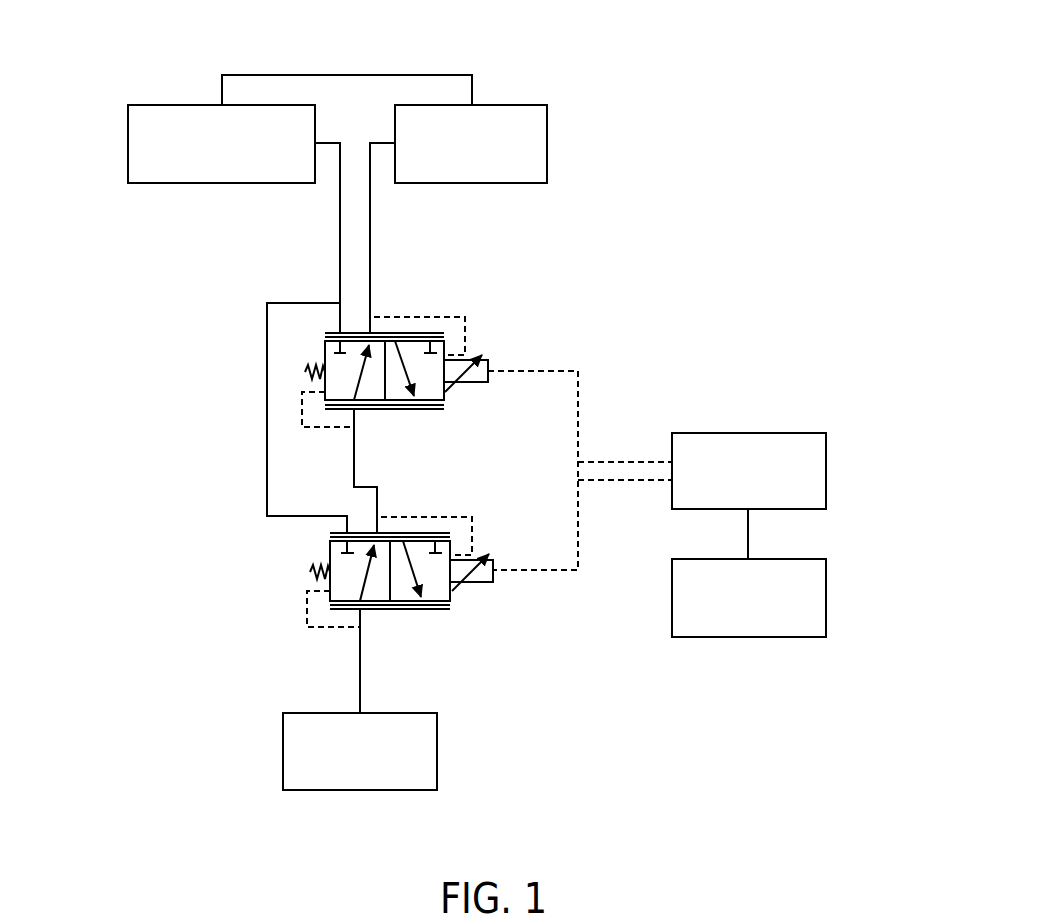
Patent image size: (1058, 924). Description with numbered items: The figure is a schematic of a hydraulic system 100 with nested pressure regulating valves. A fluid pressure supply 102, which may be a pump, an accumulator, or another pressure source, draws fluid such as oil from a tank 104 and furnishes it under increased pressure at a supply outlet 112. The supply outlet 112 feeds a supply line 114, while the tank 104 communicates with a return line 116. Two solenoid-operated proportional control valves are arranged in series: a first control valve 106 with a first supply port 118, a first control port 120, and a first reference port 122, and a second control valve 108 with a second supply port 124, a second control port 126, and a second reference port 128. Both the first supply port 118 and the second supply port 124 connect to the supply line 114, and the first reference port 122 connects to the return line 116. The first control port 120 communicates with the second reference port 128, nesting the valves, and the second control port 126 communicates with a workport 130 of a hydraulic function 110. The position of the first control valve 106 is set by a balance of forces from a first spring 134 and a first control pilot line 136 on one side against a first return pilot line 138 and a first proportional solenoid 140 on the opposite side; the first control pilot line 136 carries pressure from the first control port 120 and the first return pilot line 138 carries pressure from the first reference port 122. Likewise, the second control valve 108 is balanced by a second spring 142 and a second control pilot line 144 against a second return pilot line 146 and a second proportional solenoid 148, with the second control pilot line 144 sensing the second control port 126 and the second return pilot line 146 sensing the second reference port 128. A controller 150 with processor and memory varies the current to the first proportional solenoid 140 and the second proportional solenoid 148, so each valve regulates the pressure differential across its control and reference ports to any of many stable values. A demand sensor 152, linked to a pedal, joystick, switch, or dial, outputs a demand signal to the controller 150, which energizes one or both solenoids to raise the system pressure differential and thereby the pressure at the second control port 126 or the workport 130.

The hydraulic system 100 is at (662, 62).
The fluid pressure supply 102 is at (128, 145).
The tank 104 is at (547, 143).
The first control valve 106 is at (540, 275).
The second control valve 108 is at (550, 662).
The hydraulic function 110 is at (283, 750).
The supply outlet 112 is at (317, 140).
The supply line 114 is at (340, 268).
The return line 116 is at (370, 241).
The first supply port 118 is at (327, 337).
The first control port 120 is at (355, 410).
The first reference port 122 is at (373, 337).
The second supply port 124 is at (330, 536).
The second control port 126 is at (363, 608).
The second reference port 128 is at (377, 535).
The workport 130 is at (360, 713).
The first spring 134 is at (305, 372).
The first control pilot line 136 is at (318, 428).
The first return pilot line 138 is at (465, 325).
The first proportional solenoid 140 is at (478, 387).
The second spring 142 is at (310, 572).
The second control pilot line 144 is at (320, 627).
The second return pilot line 146 is at (472, 525).
The second proportional solenoid 148 is at (478, 587).
The controller 150 is at (826, 472).
The demand sensor 152 is at (826, 600).